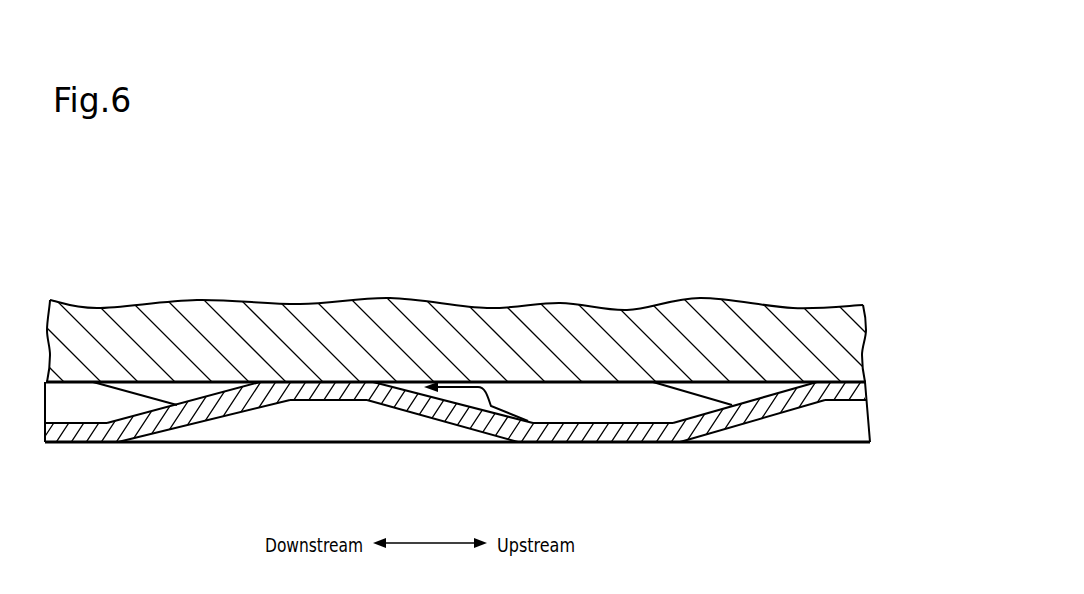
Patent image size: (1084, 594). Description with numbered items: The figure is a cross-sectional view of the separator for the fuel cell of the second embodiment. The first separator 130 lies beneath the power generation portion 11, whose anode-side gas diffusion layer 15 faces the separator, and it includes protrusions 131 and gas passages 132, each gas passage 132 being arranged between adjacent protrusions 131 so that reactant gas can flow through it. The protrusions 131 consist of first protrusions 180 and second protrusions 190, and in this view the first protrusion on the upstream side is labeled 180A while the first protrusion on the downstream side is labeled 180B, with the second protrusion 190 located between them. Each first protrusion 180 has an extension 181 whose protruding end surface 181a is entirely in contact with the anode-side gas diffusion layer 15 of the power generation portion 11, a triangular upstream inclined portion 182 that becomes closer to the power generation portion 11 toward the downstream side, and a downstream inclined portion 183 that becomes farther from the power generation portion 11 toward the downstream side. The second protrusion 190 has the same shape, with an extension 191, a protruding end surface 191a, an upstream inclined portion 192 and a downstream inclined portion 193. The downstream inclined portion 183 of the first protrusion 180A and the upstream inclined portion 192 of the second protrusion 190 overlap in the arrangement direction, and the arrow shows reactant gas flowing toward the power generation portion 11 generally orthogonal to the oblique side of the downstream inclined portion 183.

The power generation portion 11 is at (481, 373).
The anode-side gas diffusion layer 15 is at (458, 373).
The first separator 130 is at (479, 367).
The protrusions 131 is at (512, 359).
The gas passage 132 is at (596, 418).
The first protrusions 180 is at (512, 368).
The first protrusion on the upstream side 180A is at (795, 368).
The first protrusion on the downstream side 180B is at (231, 369).
The extension 181 is at (65, 402).
The protruding end surface 181a is at (638, 376).
The upstream inclined portion 182 is at (115, 400).
The downstream inclined portion 183 is at (527, 397).
The second protrusion 190 is at (396, 359).
The extension of the second protrusion 191 is at (285, 401).
The protruding end surface of the second protrusion 191a is at (334, 383).
The upstream inclined portion of the second protrusion 192 is at (387, 402).
The downstream inclined portion of the second protrusion 193 is at (248, 400).